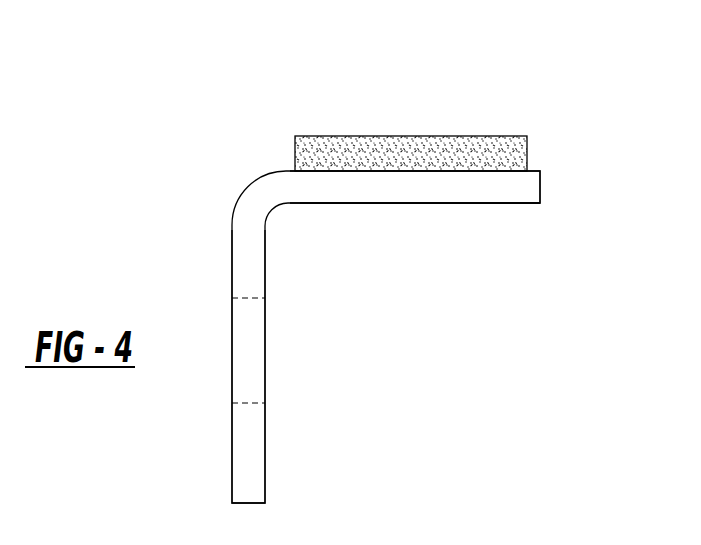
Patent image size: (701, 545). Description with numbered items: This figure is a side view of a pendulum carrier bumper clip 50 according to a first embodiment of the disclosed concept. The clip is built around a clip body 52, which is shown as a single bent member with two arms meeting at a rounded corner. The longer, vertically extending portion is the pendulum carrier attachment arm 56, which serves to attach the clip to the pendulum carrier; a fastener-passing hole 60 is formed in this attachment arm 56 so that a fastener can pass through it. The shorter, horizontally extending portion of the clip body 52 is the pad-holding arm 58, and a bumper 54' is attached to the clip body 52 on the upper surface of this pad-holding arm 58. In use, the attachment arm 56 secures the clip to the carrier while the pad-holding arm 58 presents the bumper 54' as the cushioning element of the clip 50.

The pendulum carrier bumper clip 50 is at (341, 257).
The clip body 52 is at (517, 190).
The bumper 54' is at (425, 92).
The pendulum carrier attachment arm 56 is at (248, 462).
The pad-holding arm 58 is at (467, 195).
The fastener-passing hole 60 is at (252, 350).